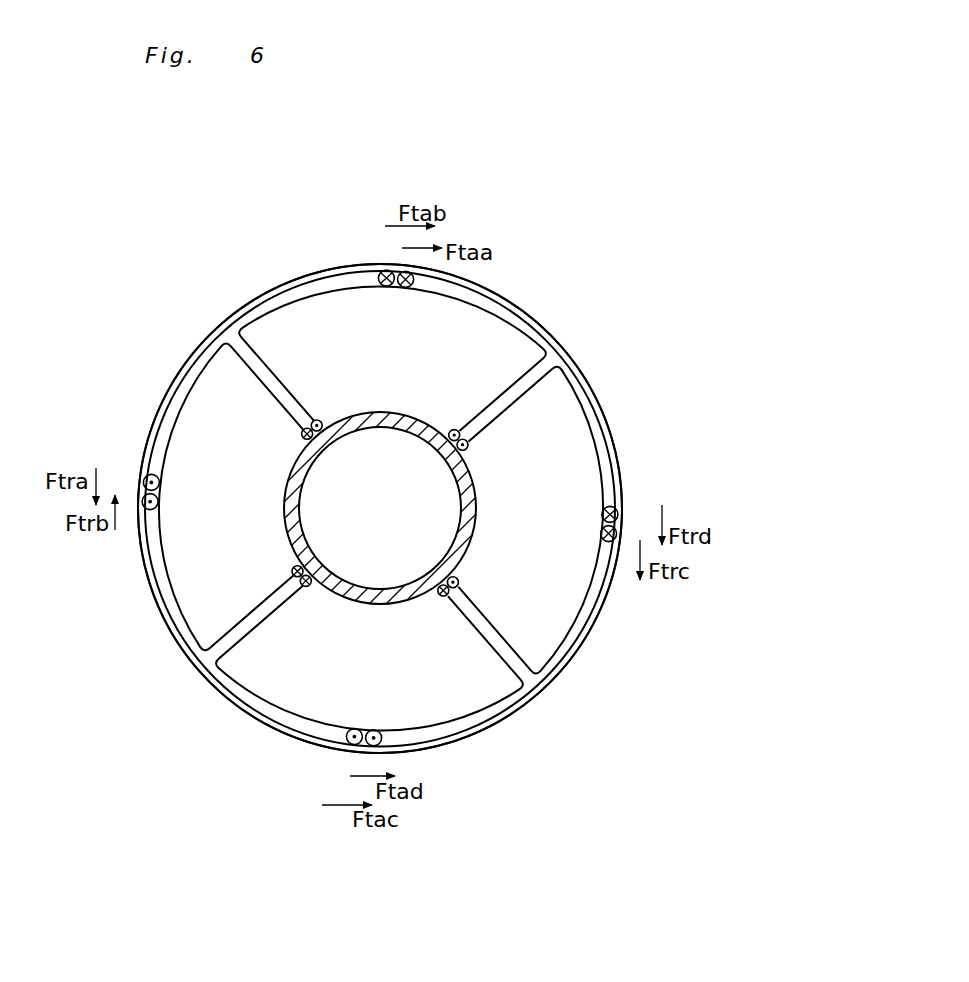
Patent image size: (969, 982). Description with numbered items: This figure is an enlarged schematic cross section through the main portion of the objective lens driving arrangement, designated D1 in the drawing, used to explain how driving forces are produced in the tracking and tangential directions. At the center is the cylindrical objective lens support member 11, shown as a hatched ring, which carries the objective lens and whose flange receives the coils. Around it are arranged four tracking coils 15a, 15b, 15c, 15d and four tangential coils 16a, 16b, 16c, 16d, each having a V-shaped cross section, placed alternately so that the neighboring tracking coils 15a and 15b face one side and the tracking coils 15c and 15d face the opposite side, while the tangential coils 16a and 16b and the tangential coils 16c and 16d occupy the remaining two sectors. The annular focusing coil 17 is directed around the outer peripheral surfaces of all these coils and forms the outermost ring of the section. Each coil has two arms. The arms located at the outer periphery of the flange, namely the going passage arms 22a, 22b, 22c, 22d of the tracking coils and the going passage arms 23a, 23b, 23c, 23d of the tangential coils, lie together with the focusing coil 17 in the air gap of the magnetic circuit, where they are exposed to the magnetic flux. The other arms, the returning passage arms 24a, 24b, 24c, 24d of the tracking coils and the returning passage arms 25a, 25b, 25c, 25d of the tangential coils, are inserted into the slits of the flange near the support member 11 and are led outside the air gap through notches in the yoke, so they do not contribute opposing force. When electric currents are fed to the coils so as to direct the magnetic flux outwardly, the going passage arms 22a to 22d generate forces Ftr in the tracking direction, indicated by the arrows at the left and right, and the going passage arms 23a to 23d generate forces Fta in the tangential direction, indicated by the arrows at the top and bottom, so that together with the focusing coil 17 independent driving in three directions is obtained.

The drive assembly D1 is at (556, 176).
The objective lens support member 11 is at (467, 512).
The tracking coil 15a is at (185, 385).
The tracking coil 15b is at (170, 608).
The tracking coil 15c is at (578, 648).
The tracking coil 15d is at (593, 412).
The tangential coil 16a is at (520, 300).
The tangential coil 16b is at (300, 285).
The tangential coil 16c is at (262, 712).
The tangential coil 16d is at (487, 715).
The focusing coil 17 is at (232, 302).
The going passage arm 22a is at (150, 478).
The going passage arm 22b is at (150, 510).
The going passage arm 22c is at (612, 548).
The going passage arm 22d is at (617, 512).
The going passage arm 23a is at (411, 272).
The going passage arm 23b is at (388, 270).
The going passage arm 23c is at (355, 752).
The going passage arm 23d is at (400, 760).
The returning passage arm 24a is at (305, 438).
The returning passage arm 24b is at (295, 574).
The returning passage arm 24c is at (459, 584).
The returning passage arm 24d is at (465, 449).
The returning passage arm 25a is at (453, 429).
The returning passage arm 25b is at (318, 420).
The returning passage arm 25c is at (307, 587).
The returning passage arm 25d is at (445, 597).